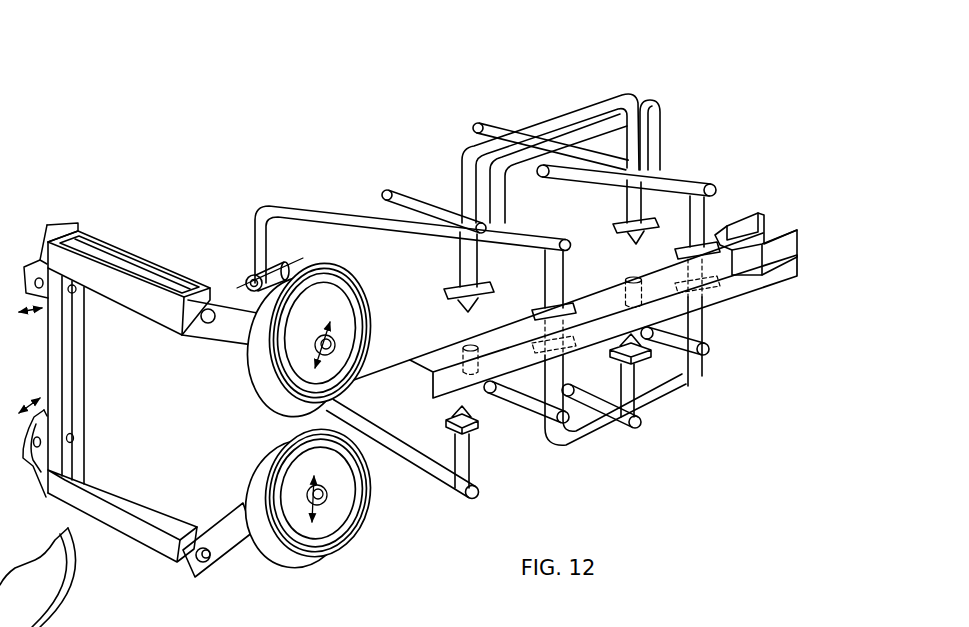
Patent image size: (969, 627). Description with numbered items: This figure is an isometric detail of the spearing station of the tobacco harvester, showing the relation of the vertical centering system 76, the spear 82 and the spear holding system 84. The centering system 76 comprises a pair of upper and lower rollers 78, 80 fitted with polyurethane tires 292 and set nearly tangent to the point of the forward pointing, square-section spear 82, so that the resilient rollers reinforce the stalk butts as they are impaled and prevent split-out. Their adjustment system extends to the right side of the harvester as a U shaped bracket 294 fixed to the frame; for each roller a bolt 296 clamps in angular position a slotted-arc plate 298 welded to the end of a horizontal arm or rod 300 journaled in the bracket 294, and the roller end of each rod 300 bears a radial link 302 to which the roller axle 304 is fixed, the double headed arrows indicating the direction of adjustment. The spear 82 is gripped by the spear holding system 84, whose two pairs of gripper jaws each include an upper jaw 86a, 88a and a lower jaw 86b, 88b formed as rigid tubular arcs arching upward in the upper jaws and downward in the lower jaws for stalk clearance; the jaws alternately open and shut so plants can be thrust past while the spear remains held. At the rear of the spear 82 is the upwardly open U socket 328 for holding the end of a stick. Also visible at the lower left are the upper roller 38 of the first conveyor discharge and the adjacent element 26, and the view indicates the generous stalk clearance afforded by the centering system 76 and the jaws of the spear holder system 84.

The vertical centering system 76 is at (120, 228).
The slotted-arc plate 298 is at (22, 265).
The horizontal arm or rod 300 is at (130, 268).
The bolt 296 is at (76, 292).
The U shaped bracket 294 is at (90, 372).
The radial link 302 is at (235, 337).
The upper roller 78 is at (270, 262).
The polyurethane tires 292 is at (368, 282).
The roller axle 304 is at (333, 343).
The lower roller 80 is at (272, 444).
The spear 82 is at (422, 358).
The spear holding system 84 is at (446, 130).
The upper jaw 86a is at (560, 115).
The upper jaw 88a is at (658, 108).
The lower jaw 86b is at (411, 473).
The lower jaw 88b is at (532, 418).
The U socket 328 is at (756, 232).
The disc rim 26 is at (80, 582).
The upper roller 38 is at (22, 593).